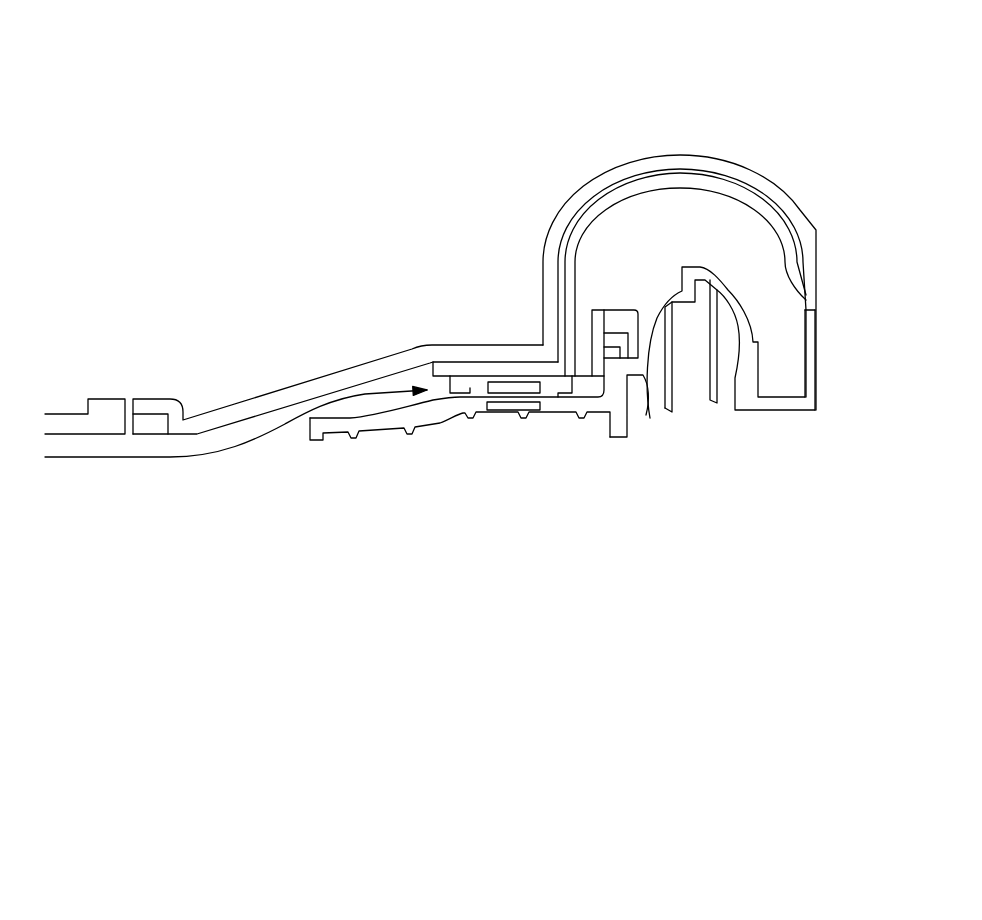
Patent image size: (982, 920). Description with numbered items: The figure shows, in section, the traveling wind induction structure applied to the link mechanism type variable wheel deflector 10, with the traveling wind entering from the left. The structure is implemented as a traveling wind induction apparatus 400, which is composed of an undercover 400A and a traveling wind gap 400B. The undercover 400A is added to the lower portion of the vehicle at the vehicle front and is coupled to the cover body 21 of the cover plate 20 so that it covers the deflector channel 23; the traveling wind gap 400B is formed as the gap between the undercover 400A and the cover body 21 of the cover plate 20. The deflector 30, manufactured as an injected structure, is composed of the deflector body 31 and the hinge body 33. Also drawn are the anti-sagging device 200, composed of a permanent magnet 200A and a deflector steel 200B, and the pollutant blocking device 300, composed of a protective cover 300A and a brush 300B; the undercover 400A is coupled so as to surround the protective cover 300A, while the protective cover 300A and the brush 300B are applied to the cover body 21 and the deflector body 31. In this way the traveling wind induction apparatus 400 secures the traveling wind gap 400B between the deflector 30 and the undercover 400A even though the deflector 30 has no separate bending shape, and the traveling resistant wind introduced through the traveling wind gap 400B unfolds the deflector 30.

The cooling structure for vehicle 10 is at (190, 205).
The cover plate 20 is at (783, 411).
The cover body 21 is at (463, 386).
The deflector channel 23 is at (787, 335).
The deflector 30 is at (578, 546).
The deflector body 31 is at (580, 411).
The hinge body 33 is at (650, 408).
The anti-sagging device 200 is at (422, 567).
The permanent magnet 200A is at (492, 387).
The deflector steel 200B is at (513, 405).
The pollutant blocking device 300 is at (610, 47).
The protective cover 300A is at (625, 307).
The brush 300B is at (677, 182).
The traveling wind induction apparatus 400 is at (214, 281).
The undercover 400A is at (241, 412).
The traveling wind gap 400B is at (369, 386).